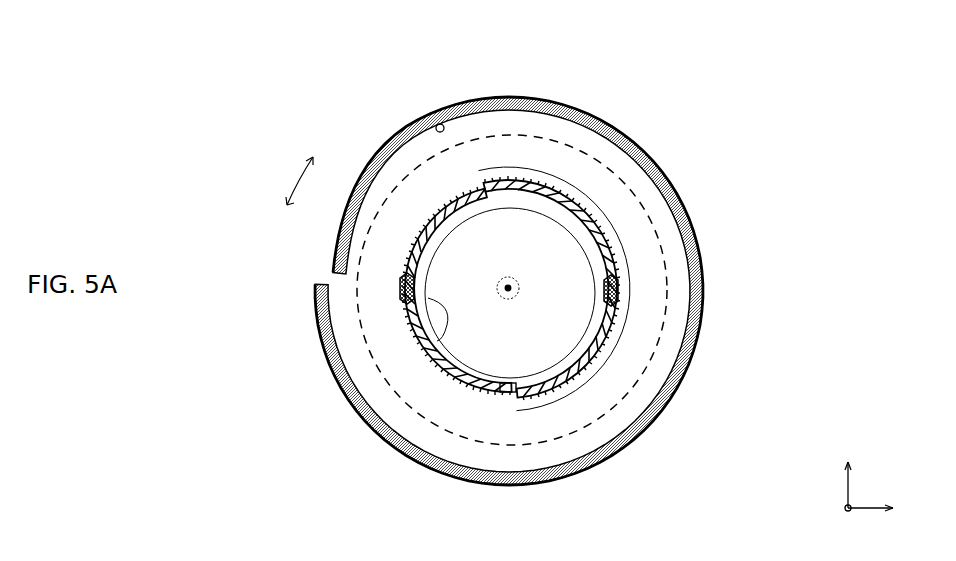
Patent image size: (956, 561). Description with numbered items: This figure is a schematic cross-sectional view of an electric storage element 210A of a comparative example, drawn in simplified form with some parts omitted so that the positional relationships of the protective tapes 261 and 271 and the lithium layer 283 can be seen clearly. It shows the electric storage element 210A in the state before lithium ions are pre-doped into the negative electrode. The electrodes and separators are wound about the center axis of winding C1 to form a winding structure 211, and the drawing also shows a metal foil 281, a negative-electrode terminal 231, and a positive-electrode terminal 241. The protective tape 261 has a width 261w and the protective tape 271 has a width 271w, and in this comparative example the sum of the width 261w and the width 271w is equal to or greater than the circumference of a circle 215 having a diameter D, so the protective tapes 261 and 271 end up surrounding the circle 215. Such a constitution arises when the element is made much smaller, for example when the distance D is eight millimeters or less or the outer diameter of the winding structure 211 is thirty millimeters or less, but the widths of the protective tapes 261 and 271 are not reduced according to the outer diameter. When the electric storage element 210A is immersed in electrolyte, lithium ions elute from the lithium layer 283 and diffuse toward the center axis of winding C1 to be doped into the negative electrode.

The electric storage element 210A is at (682, 138).
The metal foil 281 is at (380, 160).
The lithium layer 283 is at (437, 124).
The winding structure 211 is at (657, 352).
The protective tape 261 is at (597, 242).
The width of the protective tape 261 261w is at (592, 373).
The protective tape 271 is at (428, 337).
The width of the protective tape 271 271w is at (450, 372).
The positive-electrode terminal 241 is at (405, 302).
The negative-electrode terminal 231 is at (612, 286).
The circle 215 is at (505, 398).
The center axis of winding C1 is at (505, 300).